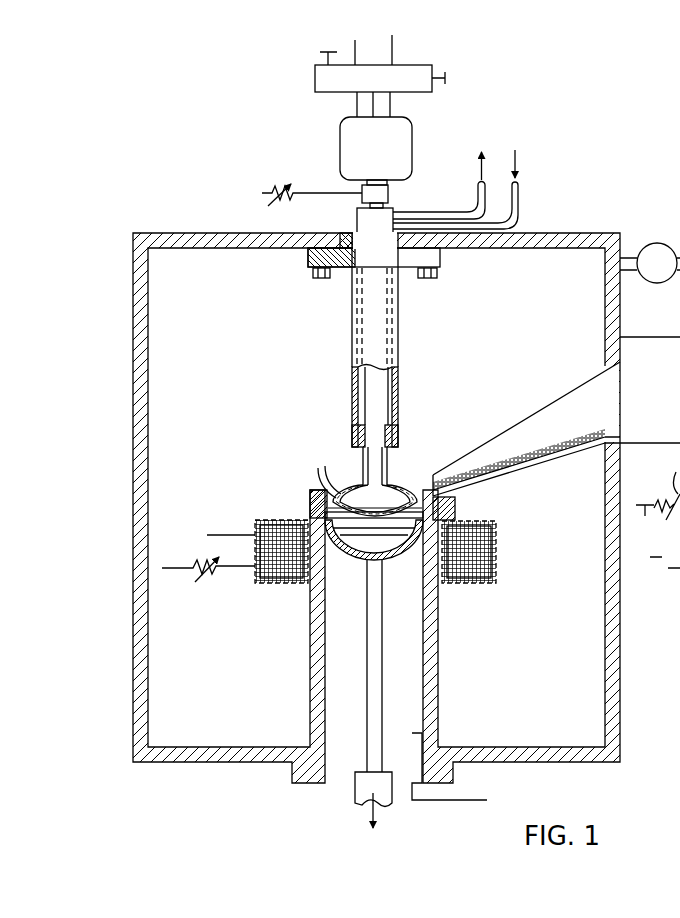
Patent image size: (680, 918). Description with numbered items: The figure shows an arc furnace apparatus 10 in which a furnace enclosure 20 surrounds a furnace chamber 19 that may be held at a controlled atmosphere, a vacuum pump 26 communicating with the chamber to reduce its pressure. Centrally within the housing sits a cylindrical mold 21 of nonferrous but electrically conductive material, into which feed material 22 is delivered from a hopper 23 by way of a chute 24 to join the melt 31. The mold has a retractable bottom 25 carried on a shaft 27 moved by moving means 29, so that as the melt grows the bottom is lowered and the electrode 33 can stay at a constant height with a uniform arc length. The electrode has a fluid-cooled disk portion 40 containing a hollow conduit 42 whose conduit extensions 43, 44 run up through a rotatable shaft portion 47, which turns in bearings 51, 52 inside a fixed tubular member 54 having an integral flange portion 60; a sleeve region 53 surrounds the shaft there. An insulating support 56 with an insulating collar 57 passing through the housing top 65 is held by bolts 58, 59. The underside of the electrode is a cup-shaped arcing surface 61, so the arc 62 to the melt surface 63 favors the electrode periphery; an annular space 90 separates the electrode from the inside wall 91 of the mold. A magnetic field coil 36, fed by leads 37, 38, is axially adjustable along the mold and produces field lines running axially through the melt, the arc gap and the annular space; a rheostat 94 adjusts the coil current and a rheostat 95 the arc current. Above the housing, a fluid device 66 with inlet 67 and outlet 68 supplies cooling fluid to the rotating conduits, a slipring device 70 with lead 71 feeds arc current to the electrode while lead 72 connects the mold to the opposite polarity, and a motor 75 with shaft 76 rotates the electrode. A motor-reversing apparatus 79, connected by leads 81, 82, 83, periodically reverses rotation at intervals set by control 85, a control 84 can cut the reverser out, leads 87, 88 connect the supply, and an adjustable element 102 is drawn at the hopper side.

The apparatus 10 is at (665, 572).
The furnace chamber 19 is at (502, 354).
The furnace enclosure 20 is at (612, 698).
The mold 21 is at (435, 632).
The feed material 22 is at (552, 450).
The hopper 23 is at (666, 444).
The chute 24 is at (500, 478).
The retractable bottom 25 is at (364, 529).
The vacuum pump 26 is at (655, 243).
The shaft 27 is at (367, 686).
The moving means 29 is at (356, 790).
The melt 31 is at (372, 535).
The electrode 33 is at (392, 482).
The magnetic field coil 36 is at (256, 546).
The lead 37 is at (236, 532).
The lead 38 is at (238, 572).
The disk portion 40 is at (363, 470).
The hollow conduit 42 is at (318, 470).
The conduit extension 43 is at (352, 436).
The conduit extension 44 is at (398, 440).
The shaft portion 47 is at (378, 392).
The bearing 51 is at (352, 292).
The bearing 52 is at (352, 420).
The sleeve 53 is at (398, 375).
The tubular member 54 is at (398, 334).
The insulating support 56 is at (308, 262).
The insulating collar 57 is at (340, 236).
The bolt 58 is at (313, 276).
The bolt 59 is at (435, 280).
The flange portion 60 is at (440, 264).
The arcing surface 61 is at (318, 506).
The arc 62 is at (448, 510).
The melt surface 63 is at (390, 548).
The housing top 65 is at (212, 232).
The fluid device 66 is at (357, 220).
The fluid inlet 67 is at (518, 196).
The fluid outlet 68 is at (478, 197).
The slipring device 70 is at (388, 196).
The lead 71 is at (325, 197).
The lead 72 is at (476, 802).
The motor 75 is at (412, 150).
The shaft 76 is at (387, 183).
The motor-reversing apparatus 79 is at (316, 78).
The lead 81 is at (357, 107).
The lead 82 is at (373, 105).
The lead 83 is at (390, 112).
The control 84 is at (320, 52).
The control 85 is at (448, 76).
The lead 87 is at (355, 44).
The lead 88 is at (392, 44).
The annular space 90 is at (324, 486).
The inside wall 91 is at (312, 508).
The rheostat 94 is at (203, 581).
The rheostat 95 is at (272, 188).
The variable control 102 is at (658, 505).